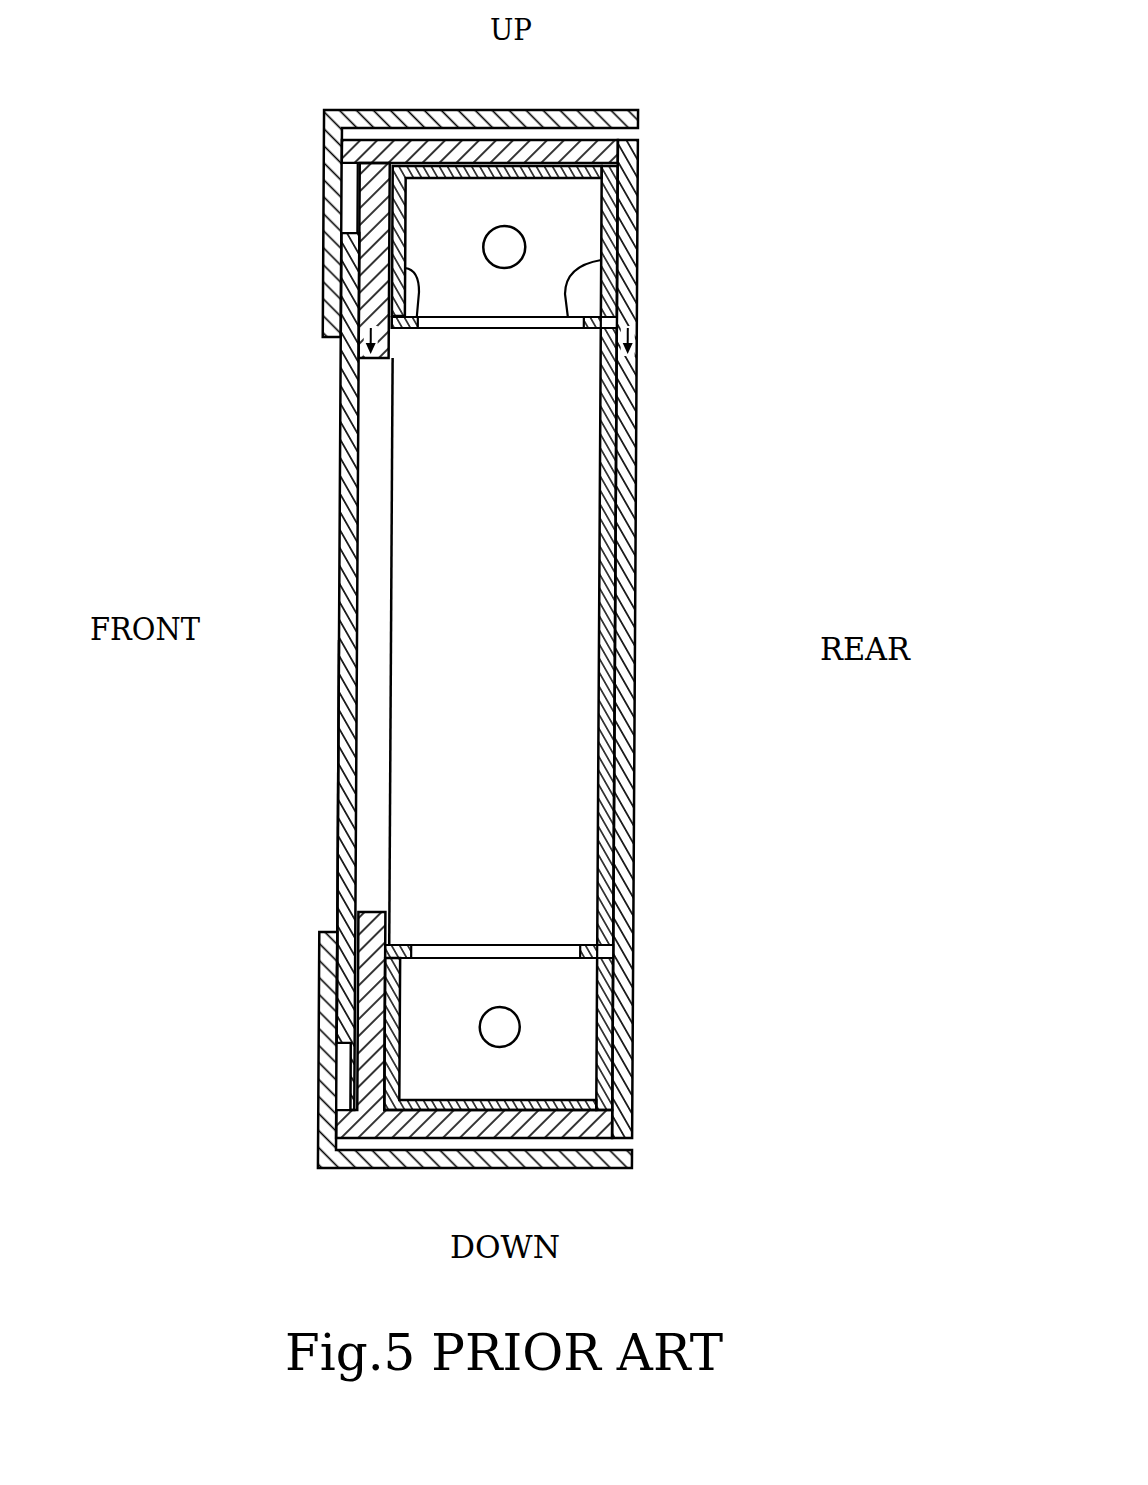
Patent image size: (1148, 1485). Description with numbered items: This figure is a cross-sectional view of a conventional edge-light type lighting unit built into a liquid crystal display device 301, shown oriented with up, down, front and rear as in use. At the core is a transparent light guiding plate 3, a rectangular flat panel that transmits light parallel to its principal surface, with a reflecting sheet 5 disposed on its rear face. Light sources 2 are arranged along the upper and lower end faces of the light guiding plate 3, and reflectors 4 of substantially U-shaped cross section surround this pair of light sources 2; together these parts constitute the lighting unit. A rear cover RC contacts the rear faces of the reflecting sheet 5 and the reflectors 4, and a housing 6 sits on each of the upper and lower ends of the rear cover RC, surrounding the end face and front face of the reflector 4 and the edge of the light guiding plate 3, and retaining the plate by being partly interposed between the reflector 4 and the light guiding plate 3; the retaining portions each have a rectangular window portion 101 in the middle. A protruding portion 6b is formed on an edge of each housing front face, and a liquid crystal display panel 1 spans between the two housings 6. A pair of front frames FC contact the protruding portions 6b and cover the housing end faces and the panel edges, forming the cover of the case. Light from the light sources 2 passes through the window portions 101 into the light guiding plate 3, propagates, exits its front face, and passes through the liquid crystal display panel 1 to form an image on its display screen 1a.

The liquid crystal display device 301 is at (645, 78).
The front frame FC is at (324, 121).
The rear cover RC is at (628, 735).
The protruding portion 6b is at (342, 152).
The housing 6 is at (372, 193).
The liquid crystal display panel 1 is at (348, 380).
The display screen 1a is at (343, 745).
The reflecting sheet 5 is at (610, 410).
The window portion 101 is at (620, 253).
The reflector 4 is at (598, 282).
The light source 2 is at (526, 243).
The light guiding plate 3 is at (565, 522).